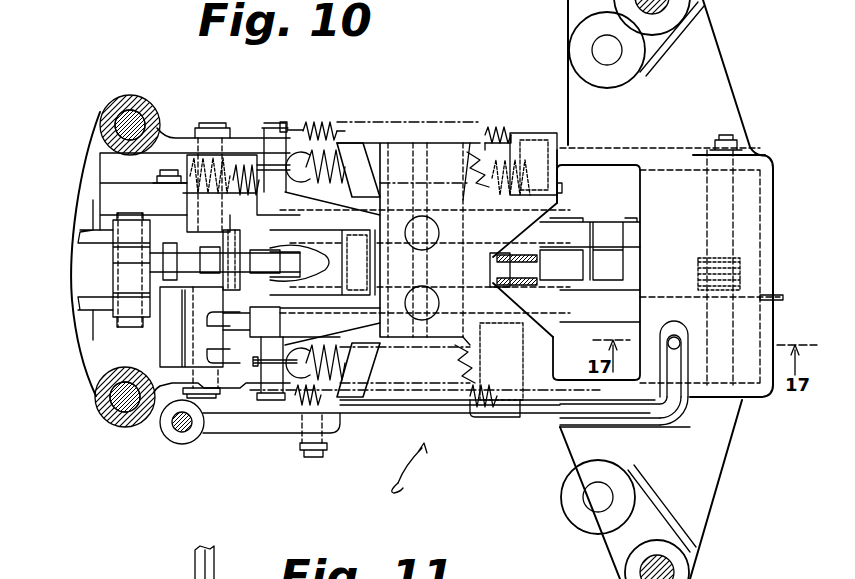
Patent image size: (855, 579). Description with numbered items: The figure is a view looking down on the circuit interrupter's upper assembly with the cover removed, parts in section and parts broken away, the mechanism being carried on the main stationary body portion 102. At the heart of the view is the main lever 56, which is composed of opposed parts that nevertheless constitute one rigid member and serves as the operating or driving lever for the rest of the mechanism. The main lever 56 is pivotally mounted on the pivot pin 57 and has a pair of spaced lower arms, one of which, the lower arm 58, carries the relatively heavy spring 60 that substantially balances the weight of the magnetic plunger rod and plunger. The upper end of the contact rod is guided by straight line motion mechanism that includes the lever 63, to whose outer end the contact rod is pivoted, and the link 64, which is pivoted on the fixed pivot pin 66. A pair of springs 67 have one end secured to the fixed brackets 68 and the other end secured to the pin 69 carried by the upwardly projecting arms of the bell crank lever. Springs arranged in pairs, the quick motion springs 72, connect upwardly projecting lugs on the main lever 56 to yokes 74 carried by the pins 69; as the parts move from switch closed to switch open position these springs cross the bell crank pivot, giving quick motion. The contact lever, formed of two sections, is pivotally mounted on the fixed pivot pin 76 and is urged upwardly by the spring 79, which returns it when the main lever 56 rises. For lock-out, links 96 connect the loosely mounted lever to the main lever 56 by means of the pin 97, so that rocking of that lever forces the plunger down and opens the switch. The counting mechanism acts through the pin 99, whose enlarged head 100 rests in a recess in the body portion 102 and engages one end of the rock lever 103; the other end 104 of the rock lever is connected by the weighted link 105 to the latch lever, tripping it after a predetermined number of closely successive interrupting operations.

The main lever 56 is at (543, 227).
The pivot pin 57 is at (218, 125).
The lower arm 58 is at (142, 200).
The spring 60 is at (277, 143).
The lever 63 is at (320, 254).
The link 64 is at (113, 262).
The fixed pivot pin 66 is at (127, 323).
The spring 67 is at (497, 130).
The fixed bracket 68 is at (543, 138).
The pin 69 is at (284, 123).
The quick motion spring 72 is at (340, 150).
The yoke 74 is at (270, 327).
The fixed pivot pin 76 is at (724, 137).
The spring 79 is at (668, 258).
The link 96 is at (510, 257).
The pin 97 is at (507, 267).
The pin 99 is at (197, 560).
The head 100 is at (673, 331).
The body portion 102 is at (80, 357).
The rock lever 103 is at (647, 420).
The end of rock lever 104 is at (188, 437).
The weighted link 105 is at (177, 423).